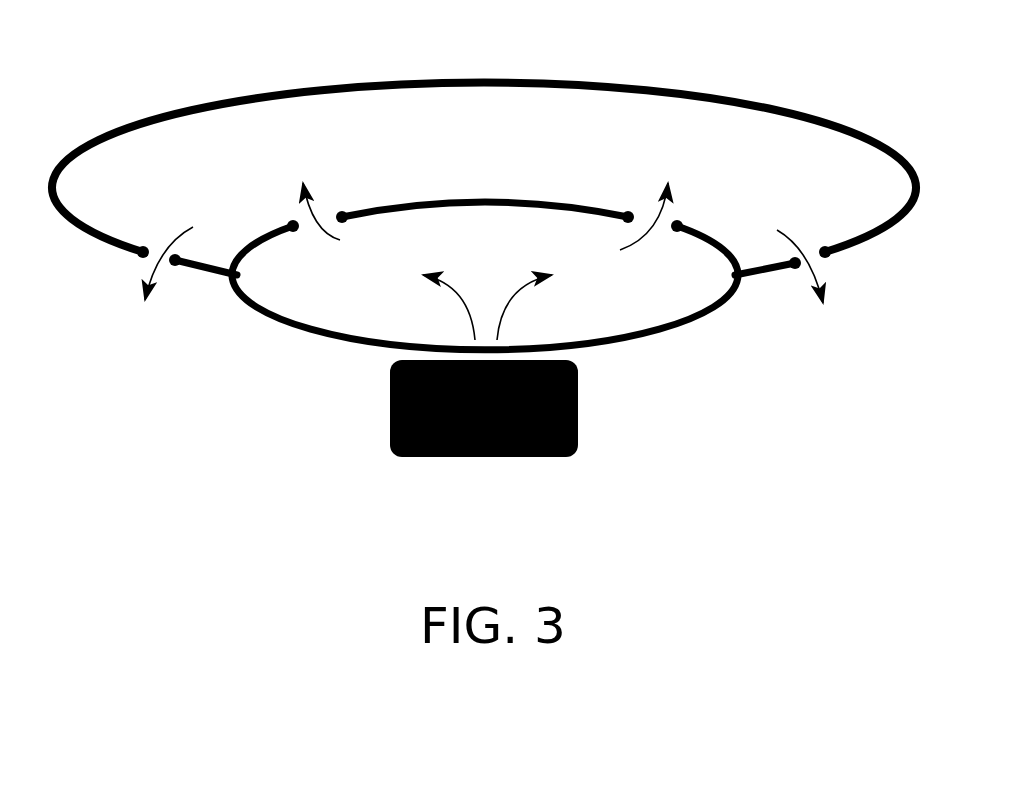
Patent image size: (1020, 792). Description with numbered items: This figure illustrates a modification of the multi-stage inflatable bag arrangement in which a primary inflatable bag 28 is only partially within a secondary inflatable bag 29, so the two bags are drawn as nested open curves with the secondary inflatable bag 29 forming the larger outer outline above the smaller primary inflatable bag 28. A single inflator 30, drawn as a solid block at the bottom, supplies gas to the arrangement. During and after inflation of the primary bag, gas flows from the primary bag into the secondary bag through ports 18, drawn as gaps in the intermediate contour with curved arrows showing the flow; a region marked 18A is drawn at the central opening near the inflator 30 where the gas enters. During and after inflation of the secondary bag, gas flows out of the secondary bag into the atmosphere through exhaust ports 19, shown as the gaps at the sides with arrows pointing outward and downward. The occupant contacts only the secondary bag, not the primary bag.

The ports 18 is at (670, 220).
The gap in inner ring 18A is at (517, 342).
The exhaust ports 19 is at (163, 270).
The primary inflatable bag 28 is at (542, 200).
The secondary inflatable bag 29 is at (667, 90).
The inflator 30 is at (580, 412).